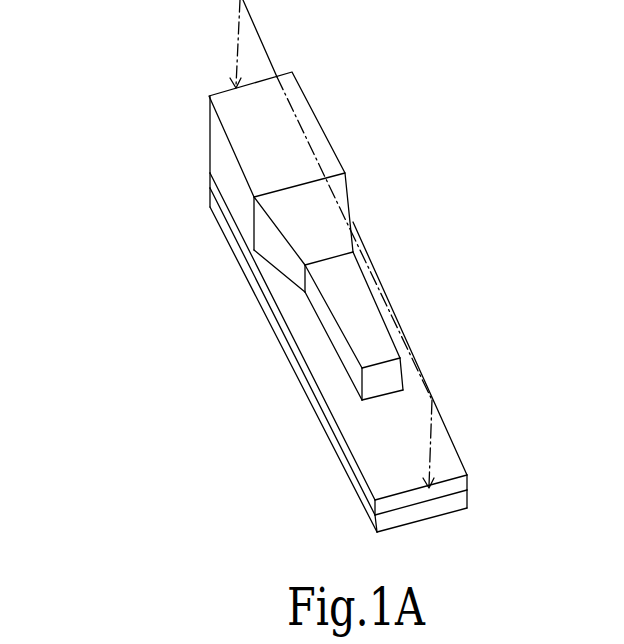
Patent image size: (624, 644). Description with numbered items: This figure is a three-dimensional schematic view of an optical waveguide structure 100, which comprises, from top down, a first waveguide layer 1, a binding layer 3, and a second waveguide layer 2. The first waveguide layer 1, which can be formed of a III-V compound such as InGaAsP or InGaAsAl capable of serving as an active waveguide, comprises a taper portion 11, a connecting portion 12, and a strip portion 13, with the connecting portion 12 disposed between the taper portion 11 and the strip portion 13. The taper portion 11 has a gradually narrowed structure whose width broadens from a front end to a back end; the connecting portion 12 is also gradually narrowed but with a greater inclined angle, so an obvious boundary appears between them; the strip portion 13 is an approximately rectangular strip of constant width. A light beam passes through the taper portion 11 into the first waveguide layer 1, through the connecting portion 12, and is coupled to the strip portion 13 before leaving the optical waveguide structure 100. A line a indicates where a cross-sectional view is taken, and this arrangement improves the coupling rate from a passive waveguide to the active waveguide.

The optical waveguide structure 100 is at (103, 27).
The first waveguide layer 1 is at (264, 236).
The taper portion 11 is at (347, 322).
The connecting portion 12 is at (290, 231).
The strip portion 13 is at (236, 129).
The binding layer 3 is at (377, 467).
The second waveguide layer 2 is at (456, 508).
The line a- a is at (338, 244).